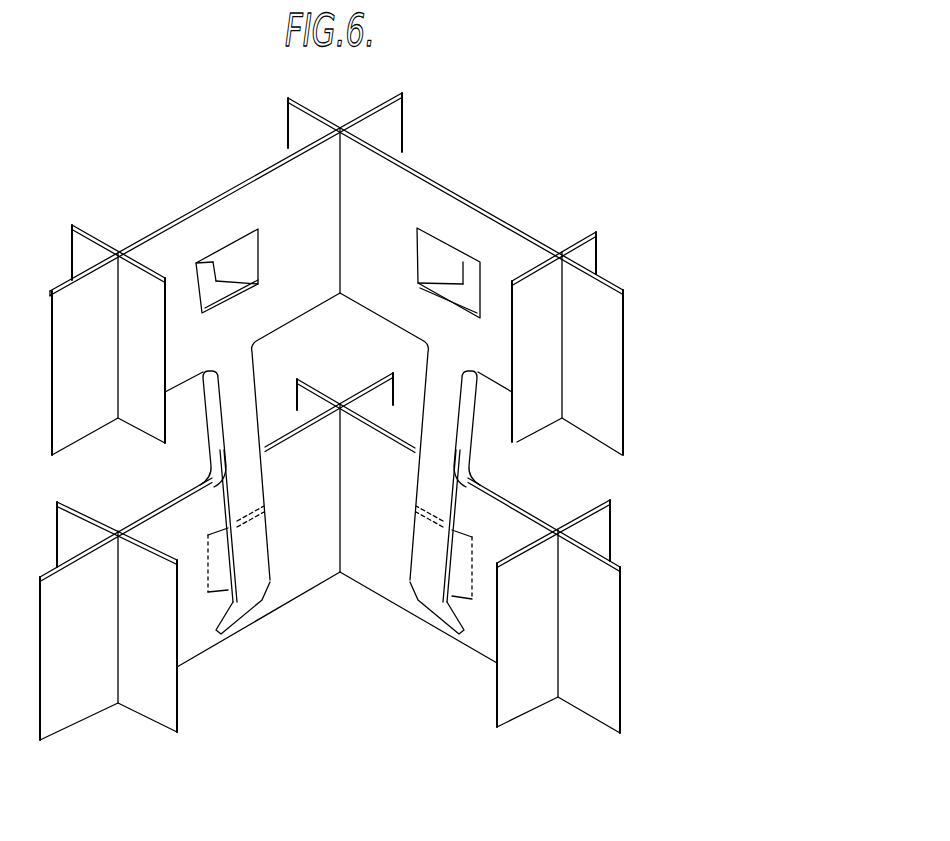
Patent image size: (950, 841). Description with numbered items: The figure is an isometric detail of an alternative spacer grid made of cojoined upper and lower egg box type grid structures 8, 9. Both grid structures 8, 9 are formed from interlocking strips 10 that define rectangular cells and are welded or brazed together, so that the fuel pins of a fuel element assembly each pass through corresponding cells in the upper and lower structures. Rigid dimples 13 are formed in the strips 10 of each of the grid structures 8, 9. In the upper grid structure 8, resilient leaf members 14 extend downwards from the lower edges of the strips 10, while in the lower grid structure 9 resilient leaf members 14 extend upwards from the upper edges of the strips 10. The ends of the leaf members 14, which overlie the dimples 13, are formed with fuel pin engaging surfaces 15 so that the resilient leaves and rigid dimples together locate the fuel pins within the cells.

The upper egg box type grid structure 8 is at (210, 213).
The lower egg box type grid structure 9 is at (69, 710).
The interlocking strip 10 is at (283, 180).
The rigid dimple 13 is at (243, 253).
The resilient leaf member 14 is at (238, 472).
The fuel pin engaging surface 15 is at (247, 548).